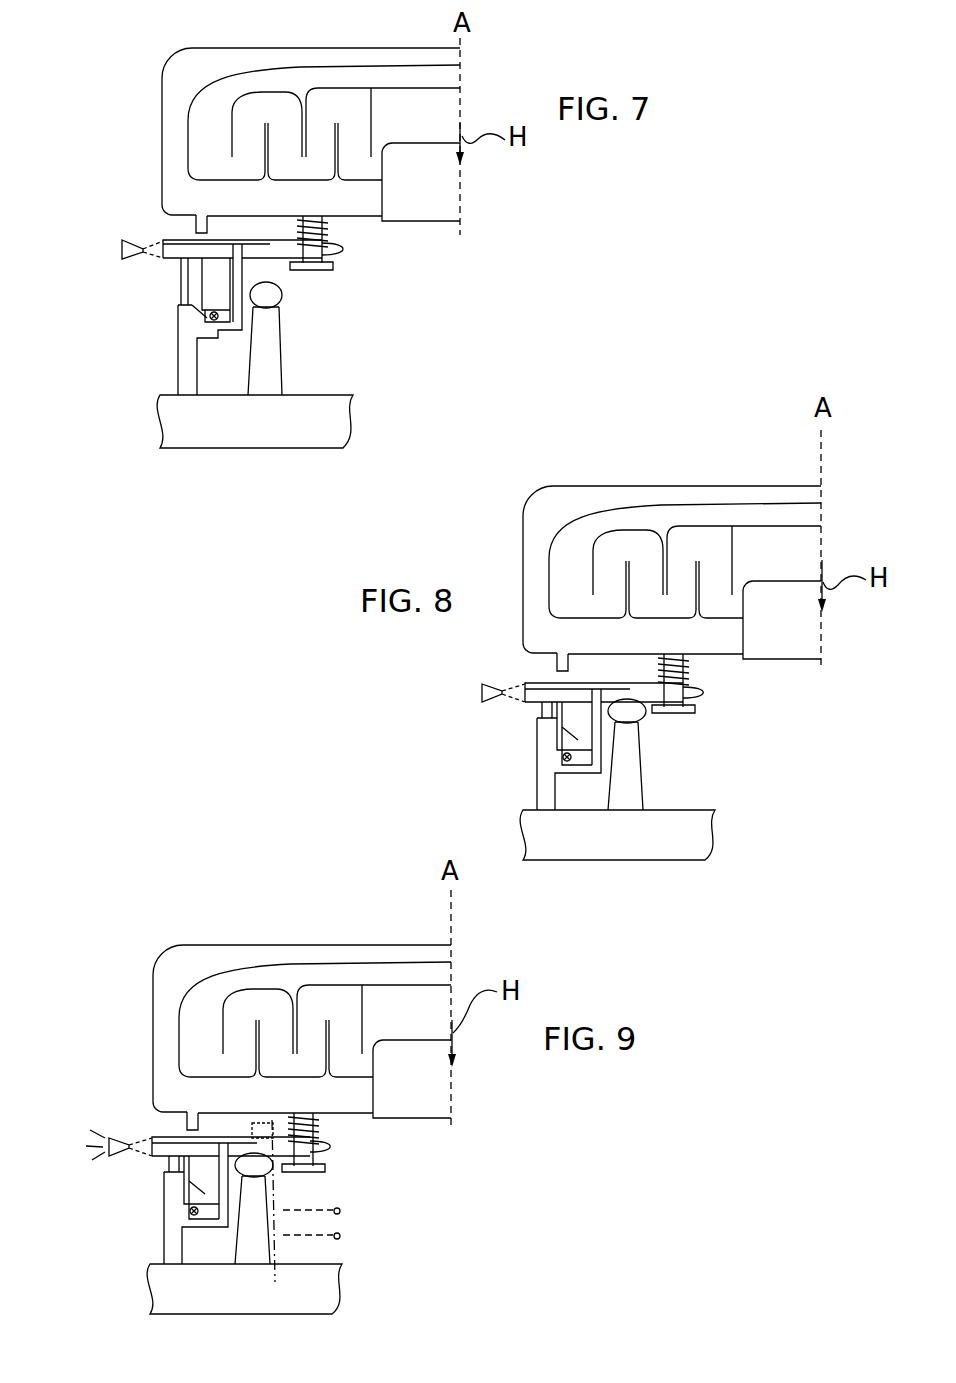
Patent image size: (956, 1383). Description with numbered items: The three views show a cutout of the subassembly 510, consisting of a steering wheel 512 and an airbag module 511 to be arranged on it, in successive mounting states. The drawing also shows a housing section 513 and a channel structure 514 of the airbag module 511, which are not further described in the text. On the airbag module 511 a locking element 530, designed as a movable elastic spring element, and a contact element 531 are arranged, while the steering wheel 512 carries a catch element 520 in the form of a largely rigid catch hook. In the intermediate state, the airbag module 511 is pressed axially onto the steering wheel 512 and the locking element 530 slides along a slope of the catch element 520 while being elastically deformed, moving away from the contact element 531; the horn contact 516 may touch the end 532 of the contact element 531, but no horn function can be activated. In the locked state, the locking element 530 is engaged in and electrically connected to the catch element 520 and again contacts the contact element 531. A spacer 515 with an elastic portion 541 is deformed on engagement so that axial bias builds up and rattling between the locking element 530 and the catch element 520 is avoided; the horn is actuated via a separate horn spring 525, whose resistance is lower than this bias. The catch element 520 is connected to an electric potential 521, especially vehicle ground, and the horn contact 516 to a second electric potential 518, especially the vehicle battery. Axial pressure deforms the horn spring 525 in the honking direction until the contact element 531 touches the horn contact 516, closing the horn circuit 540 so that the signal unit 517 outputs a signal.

In FIG. 7, the subassembly 510 is at (317, 296).
In FIG. 8, the subassembly 510 is at (610, 693).
In FIG. 9, the subassembly 510 is at (328, 1127).
In FIG. 7, the airbag module 511 is at (468, 300).
In FIG. 8, the airbag module 511 is at (732, 740).
In FIG. 9, the airbag module 511 is at (122, 996).
In FIG. 7, the steering wheel 512 is at (308, 422).
In FIG. 8, the steering wheel 512 is at (660, 843).
In FIG. 9, the steering wheel 512 is at (244, 1316).
In FIG. 7, the housing section 513 is at (433, 177).
In FIG. 8, the housing section 513 is at (825, 620).
In FIG. 9, the housing section 513 is at (457, 1079).
In FIG. 7, the heating channel 514 is at (282, 115).
In FIG. 8, the heating channel 514 is at (685, 519).
In FIG. 9, the heating channel 514 is at (315, 980).
In FIG. 7, the spacer 515 is at (265, 351).
In FIG. 8, the spacer 515 is at (627, 777).
In FIG. 9, the spacer 515 is at (252, 1220).
In FIG. 7, the horn contact 516 is at (178, 228).
In FIG. 8, the horn contact 516 is at (479, 652).
In FIG. 9, the horn contact 516 is at (135, 1098).
In FIG. 7, the signal unit 517 is at (142, 249).
In FIG. 8, the signal unit 517 is at (482, 698).
In FIG. 9, the signal unit 517 is at (102, 1174).
In FIG. 9, the second electric potential 518 is at (342, 1201).
In FIG. 7, the catch element 520 is at (190, 330).
In FIG. 8, the catch element 520 is at (547, 768).
In FIG. 9, the catch element 520 is at (141, 1217).
In FIG. 9, the electric potential 521 is at (359, 1244).
In FIG. 7, the horn spring 525 is at (311, 243).
In FIG. 8, the horn spring 525 is at (735, 683).
In FIG. 9, the horn spring 525 is at (357, 1142).
In FIG. 7, the locking element 530 is at (214, 322).
In FIG. 8, the locking element 530 is at (569, 762).
In FIG. 9, the locking element 530 is at (185, 1289).
In FIG. 7, the contact element 531 is at (203, 288).
In FIG. 8, the contact element 531 is at (547, 731).
In FIG. 9, the contact element 531 is at (189, 1173).
In FIG. 7, the end of the contact element 532 is at (199, 311).
In FIG. 8, the end of the contact element 532 is at (570, 733).
In FIG. 9, the end of the contact element 532 is at (197, 1187).
In FIG. 9, the horn circuit 540 is at (408, 1297).
In FIG. 7, the elastic portion 541 is at (266, 295).
In FIG. 8, the elastic portion 541 is at (640, 716).
In FIG. 9, the elastic portion 541 is at (254, 1165).